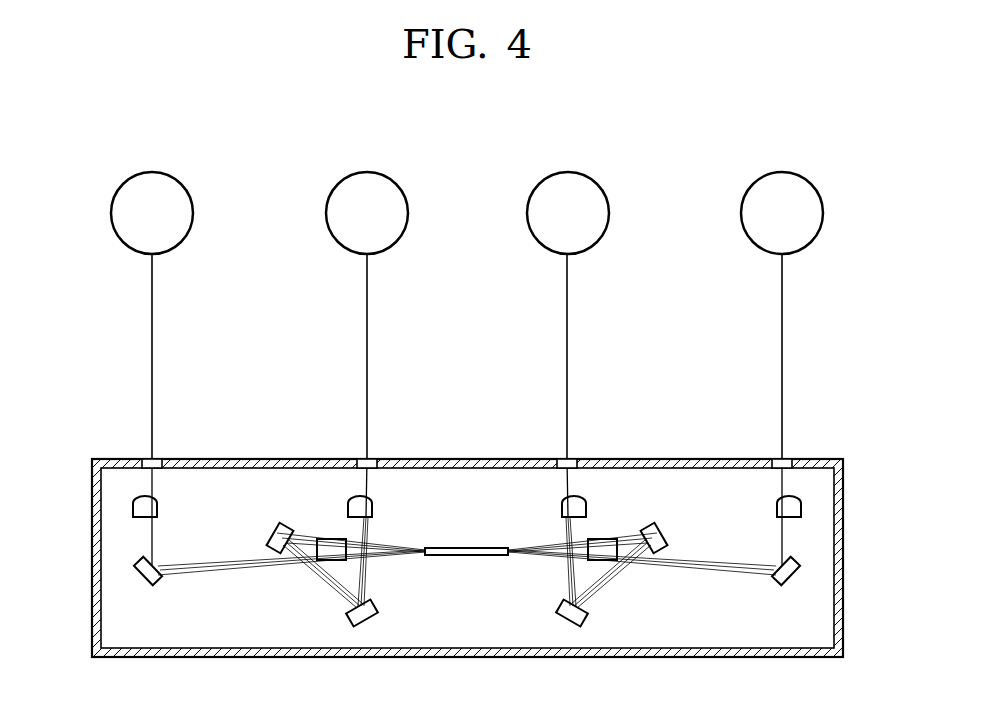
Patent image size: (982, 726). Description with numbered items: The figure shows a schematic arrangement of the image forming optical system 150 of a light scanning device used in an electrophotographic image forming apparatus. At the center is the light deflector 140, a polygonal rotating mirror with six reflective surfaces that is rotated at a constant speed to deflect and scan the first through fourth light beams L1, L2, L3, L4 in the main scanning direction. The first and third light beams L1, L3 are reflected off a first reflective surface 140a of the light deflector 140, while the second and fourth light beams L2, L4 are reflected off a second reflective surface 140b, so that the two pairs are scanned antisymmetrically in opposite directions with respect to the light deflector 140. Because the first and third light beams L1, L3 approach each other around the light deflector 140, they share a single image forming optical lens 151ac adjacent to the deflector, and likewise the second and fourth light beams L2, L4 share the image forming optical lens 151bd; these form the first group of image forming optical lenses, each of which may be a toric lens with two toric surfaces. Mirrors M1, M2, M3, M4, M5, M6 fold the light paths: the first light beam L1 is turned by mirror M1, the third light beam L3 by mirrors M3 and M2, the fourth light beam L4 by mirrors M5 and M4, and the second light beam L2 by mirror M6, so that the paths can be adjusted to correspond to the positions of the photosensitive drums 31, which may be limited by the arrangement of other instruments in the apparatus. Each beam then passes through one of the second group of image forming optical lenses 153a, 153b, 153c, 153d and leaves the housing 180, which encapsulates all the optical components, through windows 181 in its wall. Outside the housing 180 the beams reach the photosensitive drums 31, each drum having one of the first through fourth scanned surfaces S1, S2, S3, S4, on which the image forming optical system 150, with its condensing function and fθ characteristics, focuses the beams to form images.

The photosensitive drum 31 is at (188, 163).
The first scanned surface S1 is at (180, 248).
The second scanned surface S2 is at (810, 248).
The third scanned surface S3 is at (395, 248).
The fourth scanned surface S4 is at (596, 248).
The first light beam L1 is at (152, 347).
The second light beam L2 is at (782, 347).
The third light beam L3 is at (367, 347).
The fourth light beam L4 is at (568, 347).
The image forming optical system 150 is at (286, 480).
The housing 180 is at (470, 658).
The window 181 is at (158, 464).
The image forming optical lens 153a is at (141, 497).
The image forming optical lens 153b is at (796, 497).
The image forming optical lens 153c is at (352, 497).
The image forming optical lens 153d is at (582, 497).
The image forming optical lens 151ac is at (328, 540).
The image forming optical lens 151bd is at (606, 540).
The mirror M1 is at (150, 586).
The mirror M2 is at (274, 530).
The mirror M3 is at (362, 625).
The mirror M4 is at (660, 530).
The mirror M5 is at (573, 625).
The mirror M6 is at (786, 586).
The light deflector 140 is at (467, 556).
The first reflective surface 140a is at (425, 547).
The second reflective surface 140b is at (508, 547).